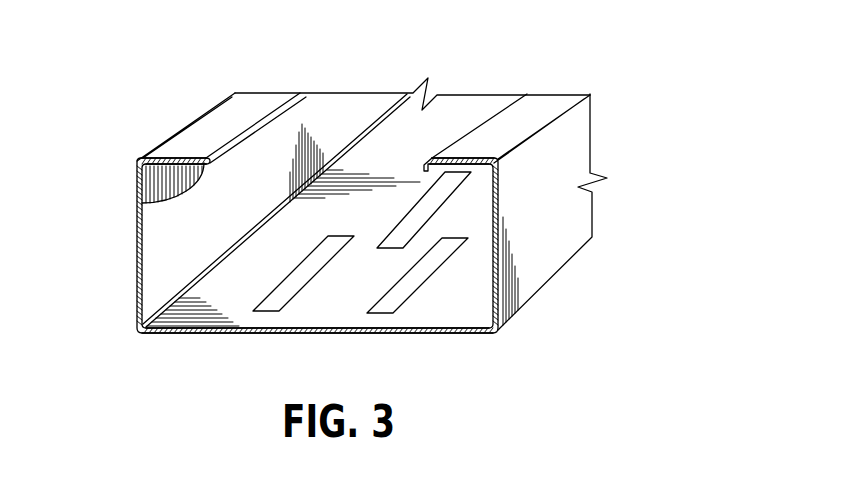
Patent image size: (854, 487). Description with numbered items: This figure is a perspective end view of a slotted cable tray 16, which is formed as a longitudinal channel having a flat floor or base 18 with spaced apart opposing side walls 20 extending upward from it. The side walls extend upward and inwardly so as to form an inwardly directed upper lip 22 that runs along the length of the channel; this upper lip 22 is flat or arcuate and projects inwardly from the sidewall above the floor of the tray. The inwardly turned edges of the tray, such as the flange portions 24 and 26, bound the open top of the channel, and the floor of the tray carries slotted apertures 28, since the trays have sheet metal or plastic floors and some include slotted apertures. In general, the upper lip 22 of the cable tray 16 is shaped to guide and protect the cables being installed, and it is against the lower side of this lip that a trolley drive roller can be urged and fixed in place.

The cable tray 16 is at (553, 272).
The bottom wall 18 is at (223, 305).
The side wall 20 is at (553, 212).
The upper lip 22 is at (532, 110).
The flange 24 is at (562, 118).
The flange 26 is at (153, 208).
The slots 28 is at (308, 275).